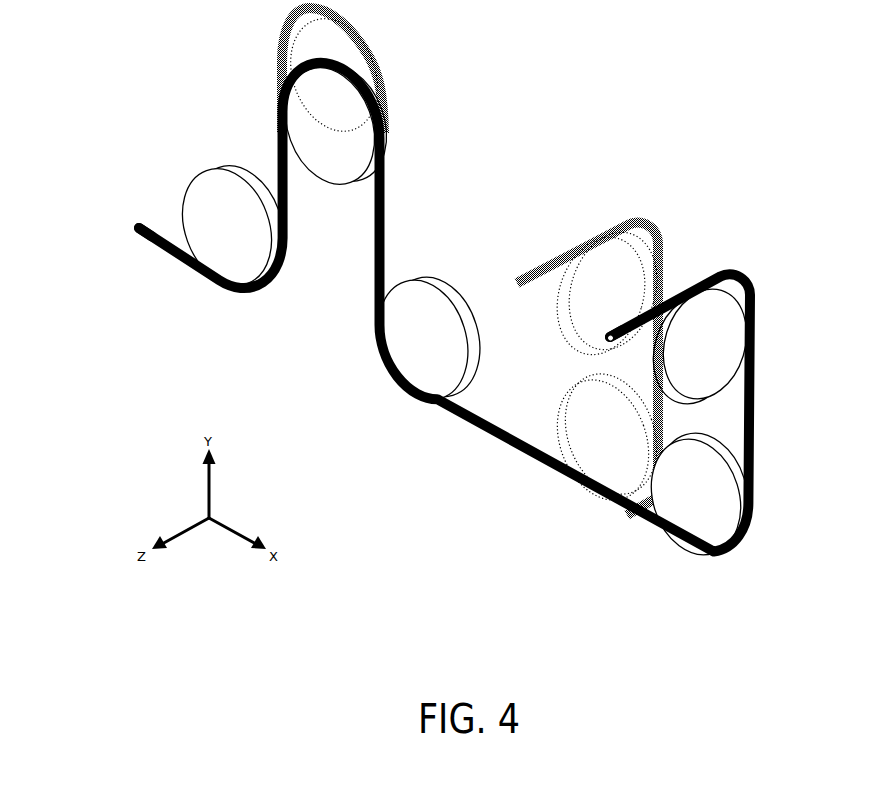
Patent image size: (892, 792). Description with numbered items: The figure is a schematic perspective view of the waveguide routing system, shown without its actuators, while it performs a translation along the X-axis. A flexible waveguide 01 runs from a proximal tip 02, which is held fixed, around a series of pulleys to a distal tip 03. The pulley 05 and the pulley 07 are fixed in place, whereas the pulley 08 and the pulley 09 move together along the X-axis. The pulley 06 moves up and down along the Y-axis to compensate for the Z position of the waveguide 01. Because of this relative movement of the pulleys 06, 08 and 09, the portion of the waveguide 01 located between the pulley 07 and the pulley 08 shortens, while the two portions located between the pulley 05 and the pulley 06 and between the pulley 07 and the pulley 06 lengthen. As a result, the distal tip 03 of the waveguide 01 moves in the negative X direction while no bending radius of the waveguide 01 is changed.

The waveguide 01 is at (288, 192).
The proximal tip 02 is at (138, 223).
The distal tip 03 is at (606, 337).
The pulley 05 is at (205, 178).
The pulley 06 is at (300, 92).
The pulley 07 is at (405, 291).
The pulley 08 is at (690, 514).
The pulley 09 is at (729, 297).